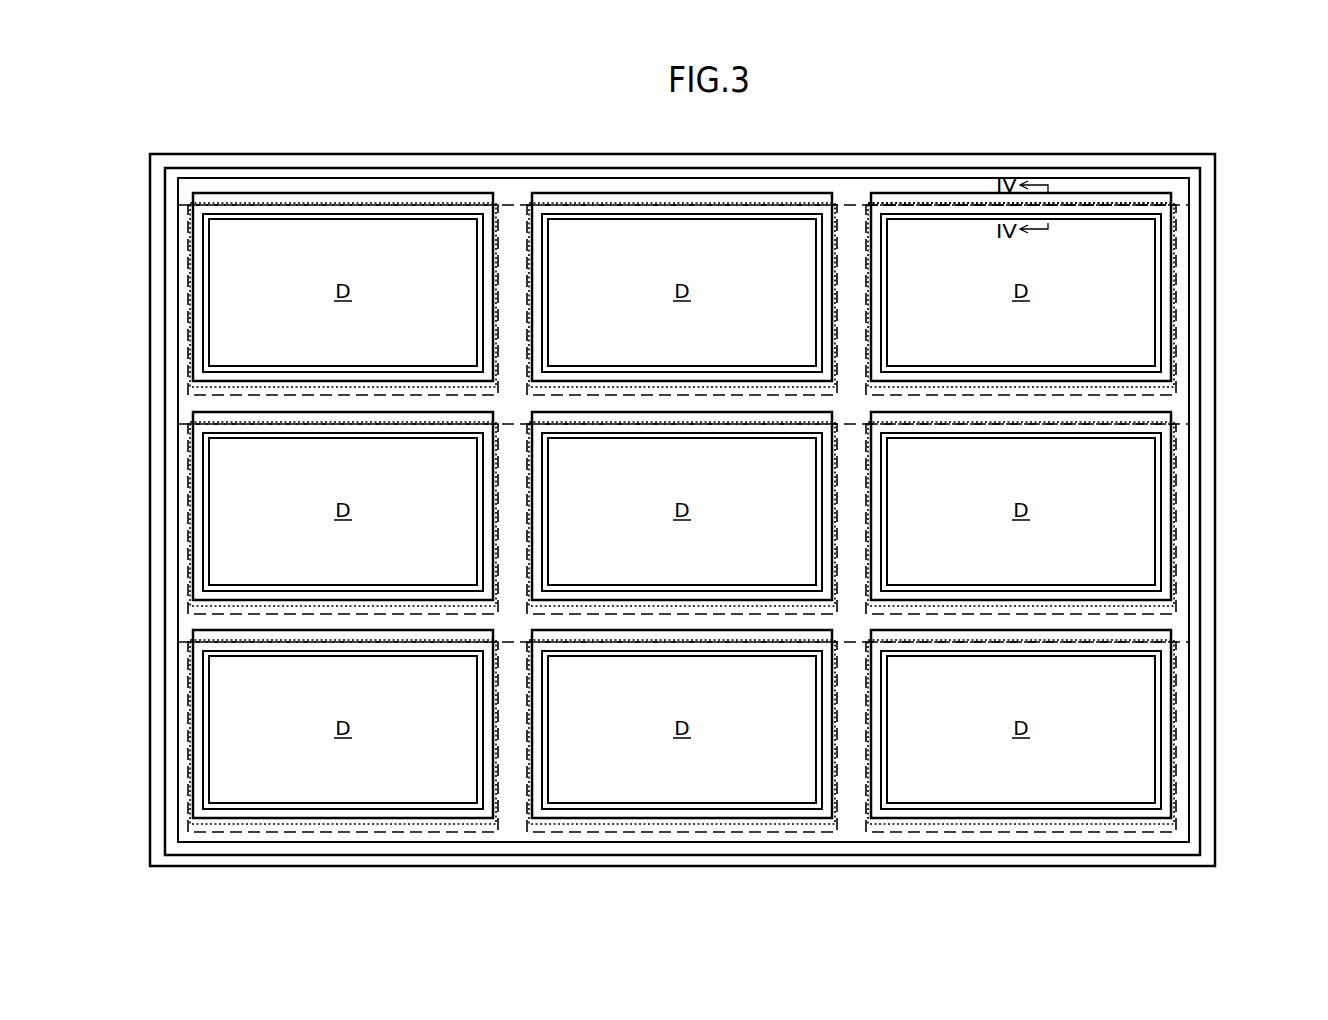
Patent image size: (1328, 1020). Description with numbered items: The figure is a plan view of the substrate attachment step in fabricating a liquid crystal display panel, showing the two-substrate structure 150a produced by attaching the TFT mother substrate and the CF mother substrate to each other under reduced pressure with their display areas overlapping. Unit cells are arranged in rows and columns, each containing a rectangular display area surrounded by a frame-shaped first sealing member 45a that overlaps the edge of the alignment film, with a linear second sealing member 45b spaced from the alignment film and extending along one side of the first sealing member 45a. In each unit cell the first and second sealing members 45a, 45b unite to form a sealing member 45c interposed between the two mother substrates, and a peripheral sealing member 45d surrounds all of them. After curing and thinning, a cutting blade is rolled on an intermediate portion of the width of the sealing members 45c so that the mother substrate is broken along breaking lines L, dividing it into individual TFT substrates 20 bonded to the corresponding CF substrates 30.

The two-substrate structure 150a is at (176, 136).
The peripheral sealing member 45d is at (1196, 320).
The sealing member 45c is at (1022, 138).
The second sealing member 45b is at (1072, 198).
The first sealing member 45a is at (1127, 212).
The breaking line L is at (1182, 204).
The CF substrate 30 is at (1160, 388).
The TFT substrate 20 is at (1142, 395).